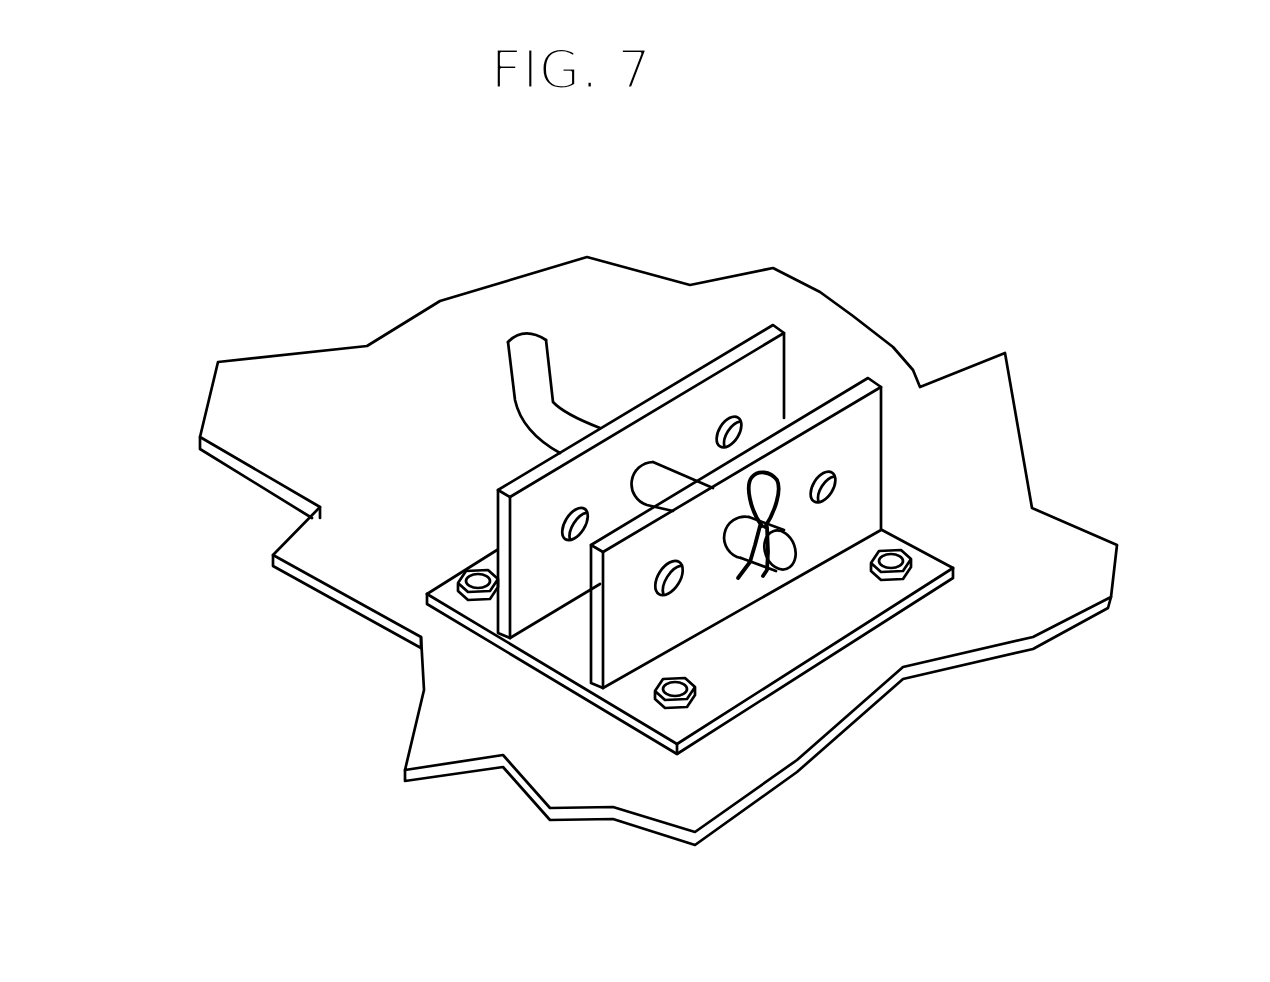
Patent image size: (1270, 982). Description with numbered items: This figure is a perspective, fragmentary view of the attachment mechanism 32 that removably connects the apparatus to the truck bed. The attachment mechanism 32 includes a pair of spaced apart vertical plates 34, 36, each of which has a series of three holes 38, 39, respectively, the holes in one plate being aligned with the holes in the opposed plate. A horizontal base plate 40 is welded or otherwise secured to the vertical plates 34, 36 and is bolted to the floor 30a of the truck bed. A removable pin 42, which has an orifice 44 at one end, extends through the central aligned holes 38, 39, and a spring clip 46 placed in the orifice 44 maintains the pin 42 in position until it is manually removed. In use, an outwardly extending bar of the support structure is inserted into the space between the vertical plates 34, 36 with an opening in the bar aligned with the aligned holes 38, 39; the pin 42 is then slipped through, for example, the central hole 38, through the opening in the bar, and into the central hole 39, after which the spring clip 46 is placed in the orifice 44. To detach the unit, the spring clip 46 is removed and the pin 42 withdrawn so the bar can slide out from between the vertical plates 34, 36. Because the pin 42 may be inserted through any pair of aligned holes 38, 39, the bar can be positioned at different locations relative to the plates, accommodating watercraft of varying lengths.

The floor of the truck bed 30a is at (727, 800).
The attachment mechanism 32 is at (812, 533).
The vertical plate 34 is at (750, 338).
The vertical plate 36 is at (888, 413).
The holes 38 is at (567, 523).
The holes 39 is at (680, 588).
The horizontal base plate 40 is at (937, 592).
The removable pin 42 is at (513, 403).
The orifice 44 is at (721, 543).
The spring clip 46 is at (772, 471).